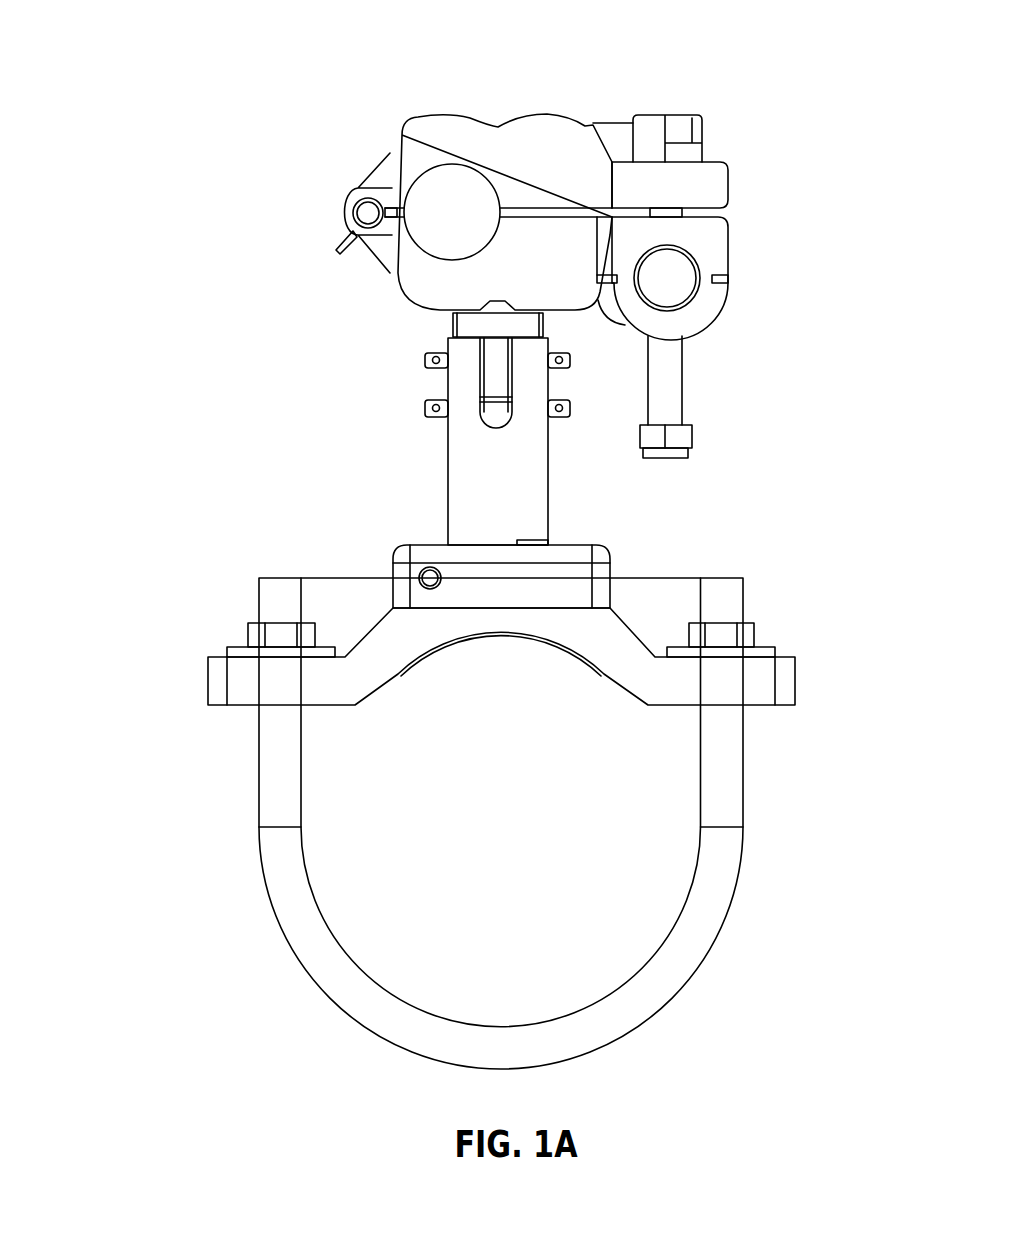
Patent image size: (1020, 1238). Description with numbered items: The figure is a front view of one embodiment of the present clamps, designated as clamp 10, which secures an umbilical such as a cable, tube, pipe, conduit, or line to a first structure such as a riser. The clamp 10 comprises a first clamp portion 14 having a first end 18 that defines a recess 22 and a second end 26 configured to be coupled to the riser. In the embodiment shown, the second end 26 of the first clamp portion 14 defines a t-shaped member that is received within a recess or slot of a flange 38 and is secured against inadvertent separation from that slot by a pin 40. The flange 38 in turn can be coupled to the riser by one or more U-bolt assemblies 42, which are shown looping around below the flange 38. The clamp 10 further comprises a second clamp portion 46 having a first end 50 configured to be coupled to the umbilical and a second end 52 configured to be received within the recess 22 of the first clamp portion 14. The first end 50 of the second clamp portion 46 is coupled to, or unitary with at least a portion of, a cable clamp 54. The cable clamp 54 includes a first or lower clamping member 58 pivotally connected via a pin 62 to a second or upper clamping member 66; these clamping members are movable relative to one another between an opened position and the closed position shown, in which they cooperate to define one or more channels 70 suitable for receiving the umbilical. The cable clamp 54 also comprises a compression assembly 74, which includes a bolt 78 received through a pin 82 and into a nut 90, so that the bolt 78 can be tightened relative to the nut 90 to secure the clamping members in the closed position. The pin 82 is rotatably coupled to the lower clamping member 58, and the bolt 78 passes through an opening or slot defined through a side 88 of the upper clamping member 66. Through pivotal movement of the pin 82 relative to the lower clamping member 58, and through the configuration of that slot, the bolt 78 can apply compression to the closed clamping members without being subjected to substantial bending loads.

The clamp 10 is at (185, 80).
The first clamp portion 14 is at (453, 423).
The first end 18 is at (555, 338).
The recess 22 is at (488, 370).
The second end 26 is at (570, 521).
The flange 38 is at (735, 685).
The pin 40 is at (430, 586).
The U-bolt assemblies 42 is at (234, 766).
The second clamp portion 46 is at (463, 327).
The first end 50 is at (433, 321).
The second end 52 is at (504, 408).
The cable clamp 54 is at (528, 96).
The first or lower clamping member 58 is at (689, 315).
The pin 62 is at (368, 213).
The second or upper clamping member 66 is at (465, 135).
The channels 70 is at (427, 182).
The compression assembly 74 is at (716, 119).
The bolt 78 is at (670, 400).
The pin 82 is at (681, 272).
The side 88 is at (727, 195).
The nut 90 is at (660, 120).